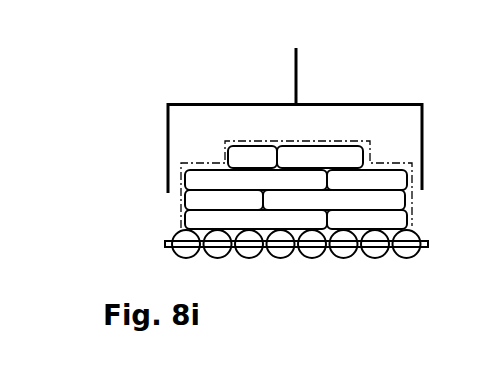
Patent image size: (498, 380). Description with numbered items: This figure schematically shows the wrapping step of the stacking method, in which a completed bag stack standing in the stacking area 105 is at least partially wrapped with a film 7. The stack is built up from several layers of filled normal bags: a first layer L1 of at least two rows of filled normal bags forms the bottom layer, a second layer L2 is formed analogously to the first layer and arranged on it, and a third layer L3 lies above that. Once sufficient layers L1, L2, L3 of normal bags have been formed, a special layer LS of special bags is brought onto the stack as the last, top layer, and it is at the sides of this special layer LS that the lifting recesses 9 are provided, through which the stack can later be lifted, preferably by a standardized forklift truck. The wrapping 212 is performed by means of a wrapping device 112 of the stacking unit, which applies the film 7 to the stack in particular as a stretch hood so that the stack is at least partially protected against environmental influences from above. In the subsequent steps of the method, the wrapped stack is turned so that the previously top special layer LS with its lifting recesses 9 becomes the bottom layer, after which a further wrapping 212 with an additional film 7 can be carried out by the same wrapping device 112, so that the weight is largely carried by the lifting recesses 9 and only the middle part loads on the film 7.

The wrapping 212 is at (175, 64).
The lifting recesses 9 is at (208, 147).
The wrapping device 112 is at (337, 103).
The special layer LS is at (327, 155).
The third layer L3 is at (180, 182).
The second layer L2 is at (412, 197).
The first layer L1 is at (188, 228).
The film 7 is at (412, 217).
The stacking area 105 is at (154, 243).